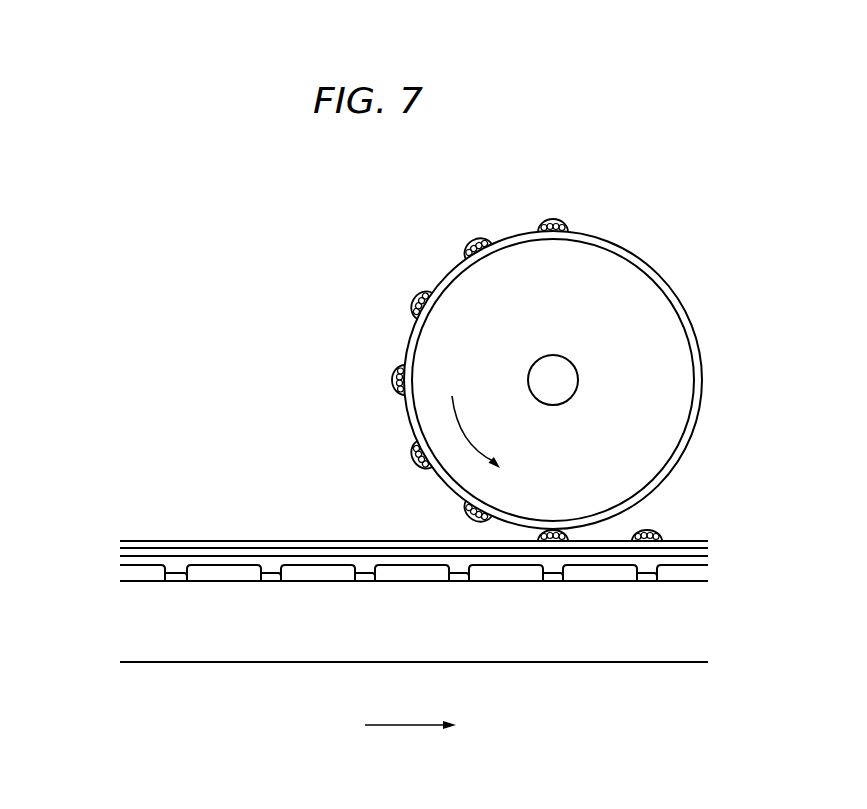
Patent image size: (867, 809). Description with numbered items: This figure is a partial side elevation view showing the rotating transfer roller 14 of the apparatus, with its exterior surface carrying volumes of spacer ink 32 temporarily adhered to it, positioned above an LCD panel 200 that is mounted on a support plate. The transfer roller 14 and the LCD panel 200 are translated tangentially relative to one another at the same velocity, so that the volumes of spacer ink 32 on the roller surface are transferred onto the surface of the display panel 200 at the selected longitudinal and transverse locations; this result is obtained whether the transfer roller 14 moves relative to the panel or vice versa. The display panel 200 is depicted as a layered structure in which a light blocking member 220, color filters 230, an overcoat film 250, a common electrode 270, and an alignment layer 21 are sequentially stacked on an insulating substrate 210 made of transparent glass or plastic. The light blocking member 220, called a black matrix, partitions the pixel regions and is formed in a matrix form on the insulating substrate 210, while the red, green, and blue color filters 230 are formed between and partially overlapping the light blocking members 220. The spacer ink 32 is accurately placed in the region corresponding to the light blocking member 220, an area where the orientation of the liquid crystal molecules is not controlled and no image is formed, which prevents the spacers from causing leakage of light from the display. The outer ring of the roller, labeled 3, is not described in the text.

The photosensitive drum 3 is at (681, 316).
The transfer roller 14 is at (663, 388).
The spacer ink 32 is at (393, 378).
The LCD panel 200 is at (422, 576).
The insulating substrate 210 is at (687, 620).
The light blocking member 220 is at (365, 578).
The color filters 230 is at (302, 572).
The overcoat film 250 is at (402, 560).
The common electrode 270 is at (423, 552).
The alignment layer 21 is at (507, 545).